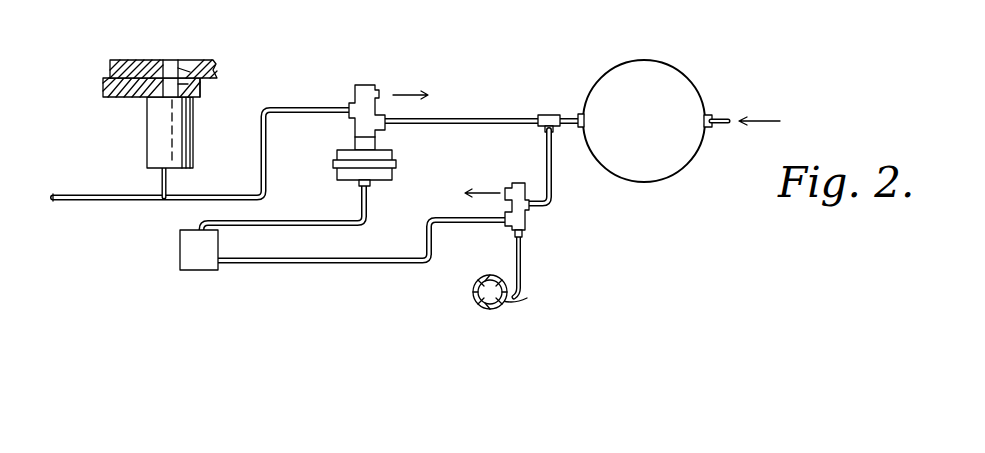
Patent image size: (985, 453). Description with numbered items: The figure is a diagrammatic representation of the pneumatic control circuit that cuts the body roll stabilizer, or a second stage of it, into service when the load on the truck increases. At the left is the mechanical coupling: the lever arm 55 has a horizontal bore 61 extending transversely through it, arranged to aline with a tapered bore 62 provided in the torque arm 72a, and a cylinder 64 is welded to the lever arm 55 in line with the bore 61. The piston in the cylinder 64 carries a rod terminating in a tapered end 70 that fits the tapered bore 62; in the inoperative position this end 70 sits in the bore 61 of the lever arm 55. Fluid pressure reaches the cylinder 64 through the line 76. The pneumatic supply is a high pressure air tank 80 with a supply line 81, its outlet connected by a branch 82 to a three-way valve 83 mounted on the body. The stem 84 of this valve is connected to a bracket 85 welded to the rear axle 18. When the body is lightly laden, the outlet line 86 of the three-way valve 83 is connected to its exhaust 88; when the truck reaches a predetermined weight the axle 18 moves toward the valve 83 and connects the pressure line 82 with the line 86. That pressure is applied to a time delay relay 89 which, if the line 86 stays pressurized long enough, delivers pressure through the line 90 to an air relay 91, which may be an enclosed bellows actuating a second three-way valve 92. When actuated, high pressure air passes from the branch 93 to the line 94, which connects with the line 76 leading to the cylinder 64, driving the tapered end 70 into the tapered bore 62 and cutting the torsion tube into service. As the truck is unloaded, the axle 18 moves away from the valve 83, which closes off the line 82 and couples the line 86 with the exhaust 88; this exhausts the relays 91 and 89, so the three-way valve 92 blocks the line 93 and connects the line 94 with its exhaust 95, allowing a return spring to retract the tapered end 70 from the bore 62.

The rear axle 18 is at (473, 294).
The lever arm 55 is at (105, 88).
The horizontal bore 61 is at (203, 88).
The tapered bore 62 is at (170, 59).
The cylinder 64 is at (155, 126).
The tapered end 70 is at (187, 68).
The torque arm 72a is at (140, 59).
The line 76 is at (161, 180).
The high pressure air tank 80 is at (659, 61).
The supply line 81 is at (741, 96).
The branch 82 is at (557, 172).
The three-way valve 83 is at (538, 225).
The stem 84 is at (522, 255).
The bracket 85 is at (535, 300).
The outlet line 86 is at (452, 224).
The exhaust 88 is at (500, 188).
The time delay relay 89 is at (186, 244).
The line 90 is at (301, 220).
The air relay 91 is at (397, 161).
The three-way valve 92 is at (351, 92).
The branch 93 is at (508, 118).
The line 94 is at (268, 135).
The exhaust 95 is at (384, 96).